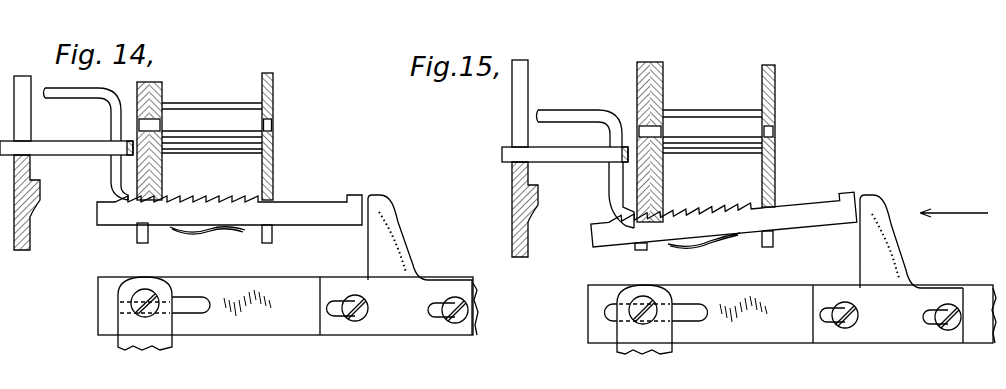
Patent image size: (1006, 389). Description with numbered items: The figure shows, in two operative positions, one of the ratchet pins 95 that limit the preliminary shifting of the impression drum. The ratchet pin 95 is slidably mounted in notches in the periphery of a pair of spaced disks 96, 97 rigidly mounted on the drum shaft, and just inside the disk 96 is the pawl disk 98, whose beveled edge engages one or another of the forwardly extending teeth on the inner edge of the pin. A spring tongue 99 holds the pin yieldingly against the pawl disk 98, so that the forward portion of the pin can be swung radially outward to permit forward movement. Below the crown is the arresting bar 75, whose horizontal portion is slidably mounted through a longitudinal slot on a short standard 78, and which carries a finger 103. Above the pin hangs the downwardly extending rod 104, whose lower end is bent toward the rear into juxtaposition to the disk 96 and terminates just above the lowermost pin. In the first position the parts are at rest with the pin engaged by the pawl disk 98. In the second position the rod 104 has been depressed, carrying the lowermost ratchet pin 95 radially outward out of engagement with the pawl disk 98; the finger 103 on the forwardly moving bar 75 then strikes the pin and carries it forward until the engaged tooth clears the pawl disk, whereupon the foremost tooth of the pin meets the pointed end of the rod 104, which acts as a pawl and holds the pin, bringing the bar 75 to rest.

In FIG. 14, the bar 75 is at (473, 282).
In FIG. 15, the bar 75 is at (975, 296).
In FIG. 14, the short standard 78 is at (172, 345).
In FIG. 15, the short standard 78 is at (673, 350).
In FIG. 14, the ratchet pin 95 is at (308, 209).
In FIG. 15, the ratchet pin 95 is at (813, 207).
In FIG. 14, the disk 96 is at (208, 156).
In FIG. 15, the disk 96 is at (707, 145).
In FIG. 14, the disk 97 is at (274, 90).
In FIG. 15, the disk 97 is at (776, 74).
In FIG. 14, the pawl disk 98 is at (162, 90).
In FIG. 15, the pawl disk 98 is at (664, 70).
In FIG. 14, the spring tongue 99 is at (214, 231).
In FIG. 15, the spring tongue 99 is at (716, 243).
In FIG. 14, the finger 103 is at (389, 212).
In FIG. 15, the finger 103 is at (874, 212).
In FIG. 14, the rod 104 is at (63, 97).
In FIG. 15, the rod 104 is at (568, 118).